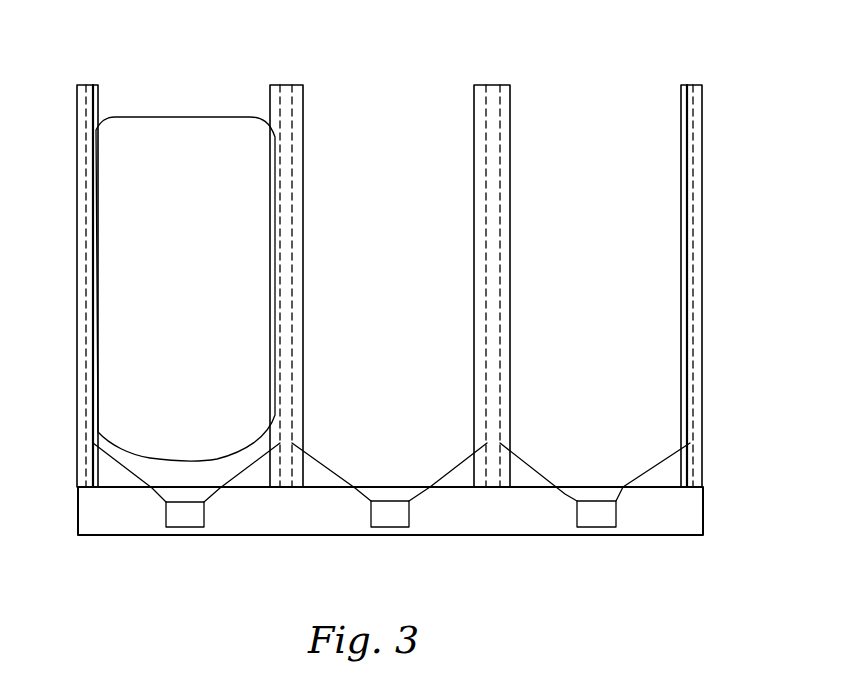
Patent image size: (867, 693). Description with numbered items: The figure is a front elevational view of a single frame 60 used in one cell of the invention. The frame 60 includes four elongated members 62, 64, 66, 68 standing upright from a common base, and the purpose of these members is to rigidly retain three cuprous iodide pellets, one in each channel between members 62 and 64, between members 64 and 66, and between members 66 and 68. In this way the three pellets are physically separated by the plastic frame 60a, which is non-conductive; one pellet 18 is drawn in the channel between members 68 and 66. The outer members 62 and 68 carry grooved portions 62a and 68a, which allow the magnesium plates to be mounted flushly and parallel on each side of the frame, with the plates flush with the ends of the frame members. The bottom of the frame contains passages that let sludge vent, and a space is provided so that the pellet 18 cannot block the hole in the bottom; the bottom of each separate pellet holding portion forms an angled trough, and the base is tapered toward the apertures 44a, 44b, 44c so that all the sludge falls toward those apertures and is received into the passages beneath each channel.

The pellet 18 is at (153, 115).
The frame 60 is at (722, 485).
The plastic frame 60a is at (287, 508).
The elongated member 62 is at (703, 332).
The grooved portion 62a is at (686, 307).
The elongated member 64 is at (510, 333).
The elongated member 66 is at (303, 335).
The elongated member 68 is at (100, 332).
The grooved portion 68a is at (98, 407).
The aperture 44a is at (185, 512).
The aperture 44b is at (385, 520).
The aperture 44c is at (585, 520).